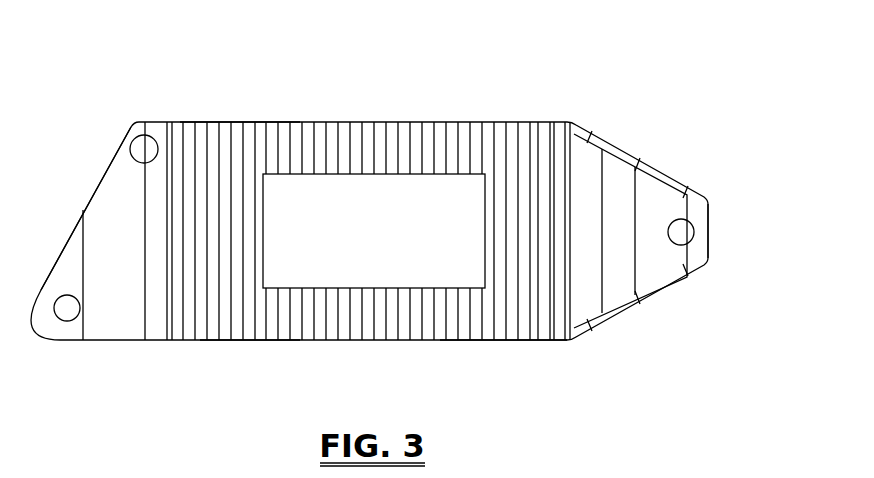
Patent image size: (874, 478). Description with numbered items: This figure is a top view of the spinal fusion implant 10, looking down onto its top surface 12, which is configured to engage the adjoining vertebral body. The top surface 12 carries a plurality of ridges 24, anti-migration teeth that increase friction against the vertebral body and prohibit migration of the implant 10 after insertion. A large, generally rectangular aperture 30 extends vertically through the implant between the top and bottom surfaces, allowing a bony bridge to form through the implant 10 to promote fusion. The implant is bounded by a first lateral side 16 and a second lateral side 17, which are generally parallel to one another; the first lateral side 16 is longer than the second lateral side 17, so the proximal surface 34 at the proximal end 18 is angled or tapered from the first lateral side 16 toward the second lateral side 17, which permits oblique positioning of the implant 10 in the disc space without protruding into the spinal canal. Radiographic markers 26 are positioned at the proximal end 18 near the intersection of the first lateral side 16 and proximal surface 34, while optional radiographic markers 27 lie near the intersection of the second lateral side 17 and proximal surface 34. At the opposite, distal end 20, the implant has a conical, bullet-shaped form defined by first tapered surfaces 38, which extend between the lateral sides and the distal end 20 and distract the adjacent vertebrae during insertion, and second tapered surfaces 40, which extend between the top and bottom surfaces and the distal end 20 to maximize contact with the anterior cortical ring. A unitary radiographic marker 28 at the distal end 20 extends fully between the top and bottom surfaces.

The spinal fusion implant 10 is at (466, 64).
The top surface 12 is at (387, 320).
The first lateral side 16 is at (482, 344).
The second lateral side 17 is at (224, 119).
The proximal end 18 is at (103, 172).
The distal end 20 is at (710, 221).
The ridges 24 is at (253, 323).
The radiographic markers 26 is at (64, 309).
The radiographic markers 27 is at (137, 146).
The radiographic marker 28 is at (688, 232).
The aperture 30 is at (359, 242).
The proximal surface 34 is at (62, 240).
The first tapered surfaces 38 is at (634, 146).
The second tapered surfaces 40 is at (618, 203).